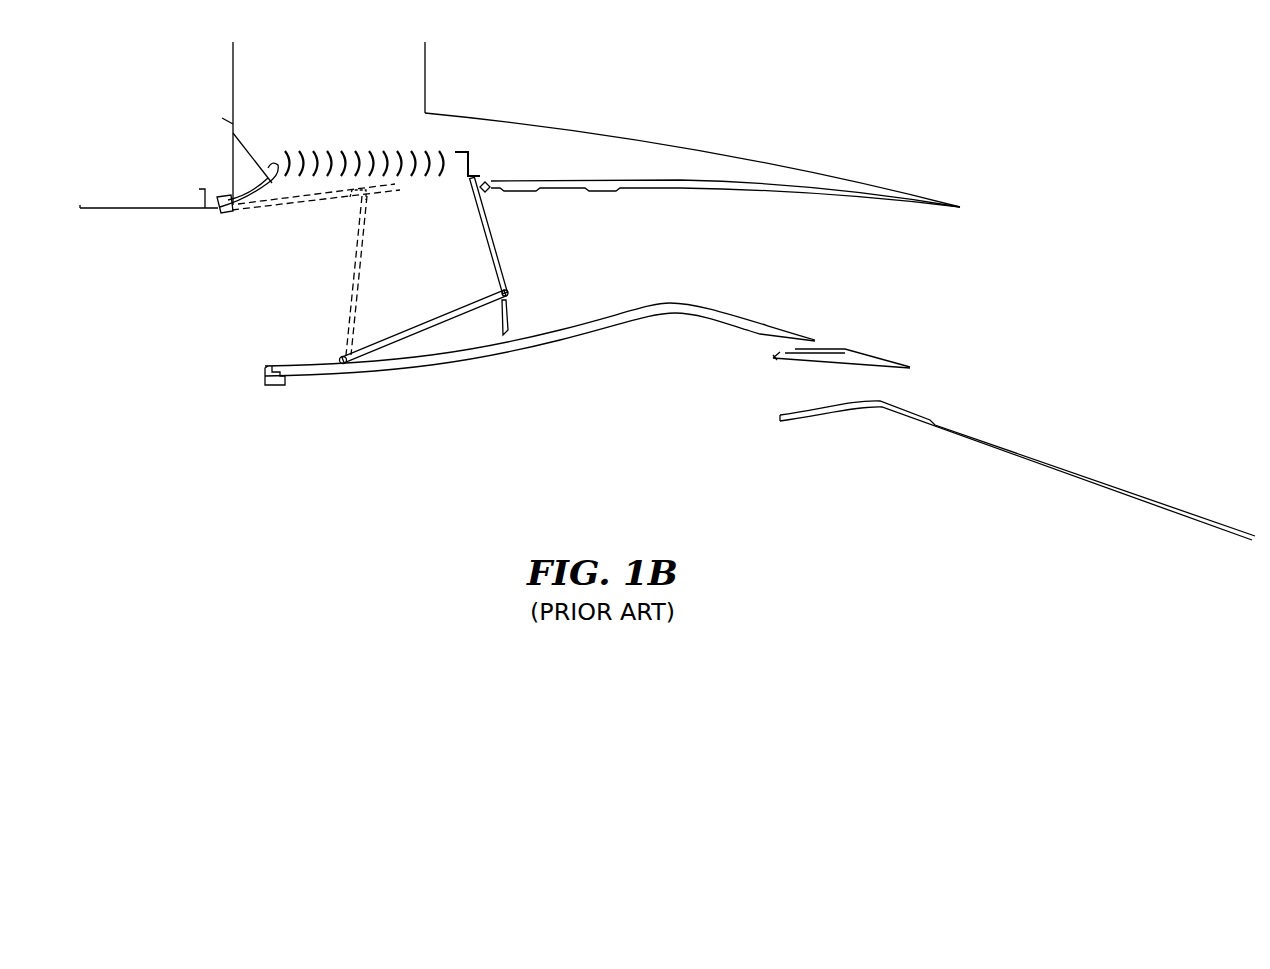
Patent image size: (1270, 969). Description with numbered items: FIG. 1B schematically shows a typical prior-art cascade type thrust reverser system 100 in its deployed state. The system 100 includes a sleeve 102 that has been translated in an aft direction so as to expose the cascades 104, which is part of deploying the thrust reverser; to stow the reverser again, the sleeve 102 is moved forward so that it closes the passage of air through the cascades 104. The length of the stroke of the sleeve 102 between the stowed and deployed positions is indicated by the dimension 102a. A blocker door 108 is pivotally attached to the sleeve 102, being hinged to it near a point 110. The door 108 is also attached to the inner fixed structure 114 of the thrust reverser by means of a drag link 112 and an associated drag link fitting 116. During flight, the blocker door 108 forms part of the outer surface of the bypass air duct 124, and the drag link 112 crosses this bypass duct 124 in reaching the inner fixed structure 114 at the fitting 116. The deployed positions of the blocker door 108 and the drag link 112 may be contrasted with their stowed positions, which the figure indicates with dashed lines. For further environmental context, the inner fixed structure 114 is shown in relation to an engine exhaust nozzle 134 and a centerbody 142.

The cascade type thrust reverser system 100 is at (1032, 120).
The sleeve 102 is at (675, 132).
The sleeve stroke length 102a is at (425, 42).
The cascades 104 is at (333, 147).
The blocker door 108 is at (492, 247).
The hinge point 110 is at (488, 176).
The drag link 112 is at (410, 337).
The inner fixed structure 114 is at (543, 348).
The drag link fitting 116 is at (335, 357).
The bypass air duct 124 is at (591, 303).
The engine exhaust nozzle 134 is at (830, 350).
The centerbody 142 is at (1008, 442).